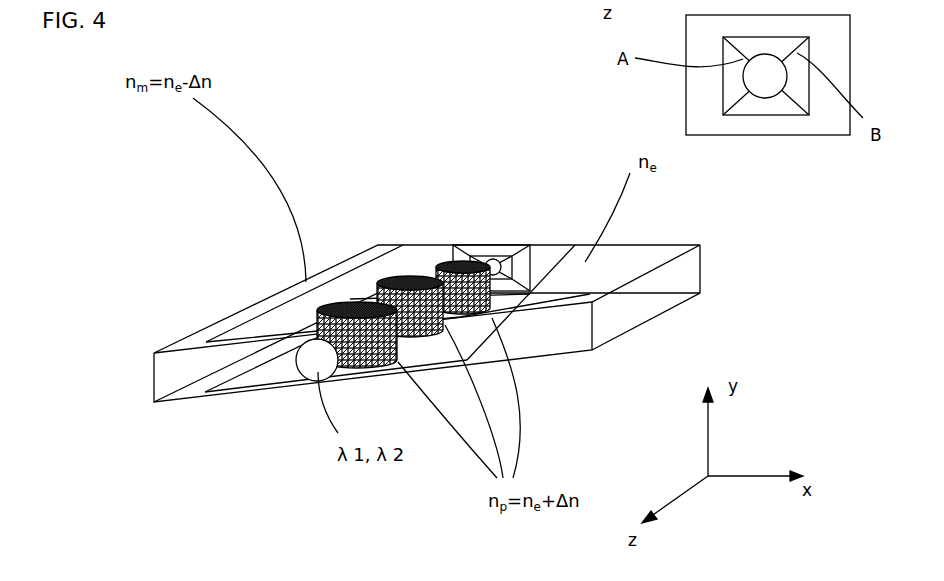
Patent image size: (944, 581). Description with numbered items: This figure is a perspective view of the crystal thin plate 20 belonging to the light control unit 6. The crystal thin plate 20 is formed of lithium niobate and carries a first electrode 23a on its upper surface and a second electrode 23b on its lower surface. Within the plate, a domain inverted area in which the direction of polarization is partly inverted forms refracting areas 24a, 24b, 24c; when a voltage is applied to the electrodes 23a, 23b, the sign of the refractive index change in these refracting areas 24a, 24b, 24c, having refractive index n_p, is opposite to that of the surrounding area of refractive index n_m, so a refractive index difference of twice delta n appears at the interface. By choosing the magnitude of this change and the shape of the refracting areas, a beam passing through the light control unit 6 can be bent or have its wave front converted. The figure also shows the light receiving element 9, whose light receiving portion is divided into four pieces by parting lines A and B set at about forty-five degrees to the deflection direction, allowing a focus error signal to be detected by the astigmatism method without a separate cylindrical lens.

The light control unit 6 is at (443, 129).
The light receiving element 9 is at (515, 262).
The crystal thin plate 20 is at (553, 330).
The first electrode 23a is at (265, 320).
The second electrode 23b is at (260, 372).
The refracting area 24a is at (350, 302).
The refracting area 24b is at (398, 276).
The refracting area 24c is at (462, 261).